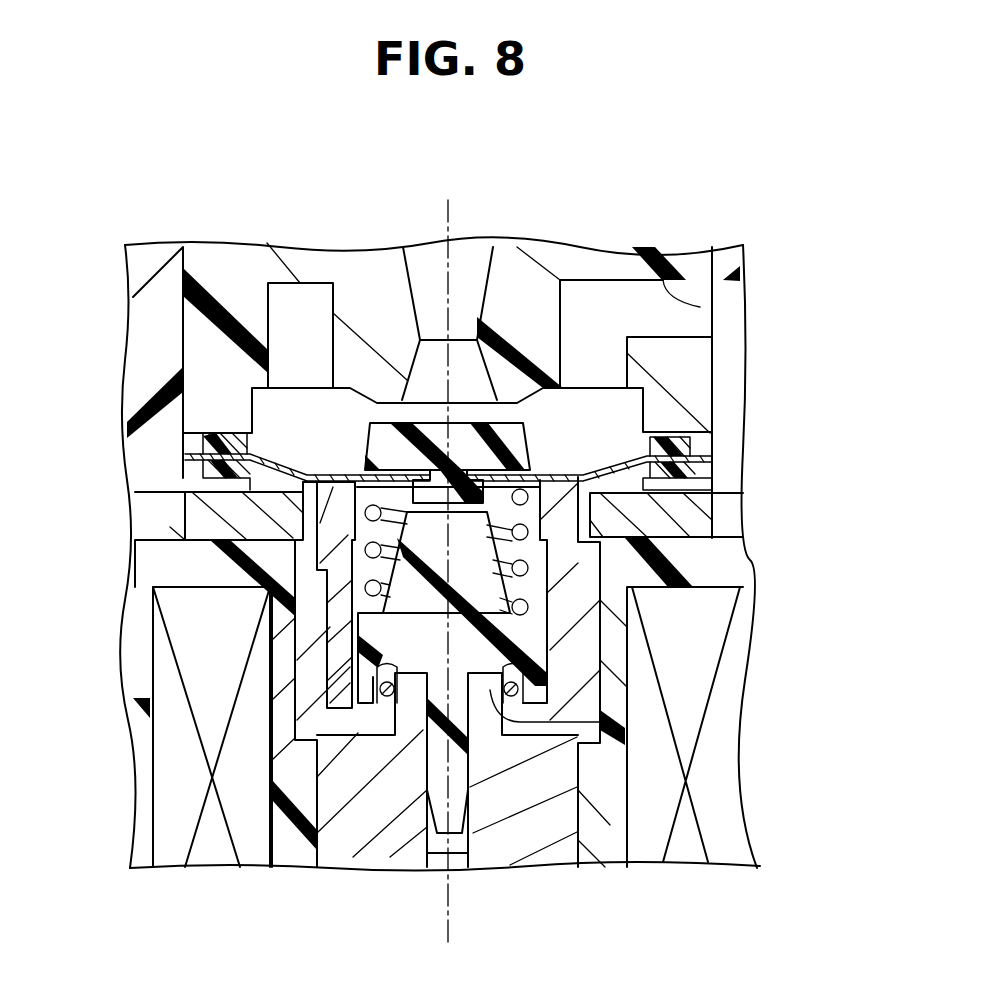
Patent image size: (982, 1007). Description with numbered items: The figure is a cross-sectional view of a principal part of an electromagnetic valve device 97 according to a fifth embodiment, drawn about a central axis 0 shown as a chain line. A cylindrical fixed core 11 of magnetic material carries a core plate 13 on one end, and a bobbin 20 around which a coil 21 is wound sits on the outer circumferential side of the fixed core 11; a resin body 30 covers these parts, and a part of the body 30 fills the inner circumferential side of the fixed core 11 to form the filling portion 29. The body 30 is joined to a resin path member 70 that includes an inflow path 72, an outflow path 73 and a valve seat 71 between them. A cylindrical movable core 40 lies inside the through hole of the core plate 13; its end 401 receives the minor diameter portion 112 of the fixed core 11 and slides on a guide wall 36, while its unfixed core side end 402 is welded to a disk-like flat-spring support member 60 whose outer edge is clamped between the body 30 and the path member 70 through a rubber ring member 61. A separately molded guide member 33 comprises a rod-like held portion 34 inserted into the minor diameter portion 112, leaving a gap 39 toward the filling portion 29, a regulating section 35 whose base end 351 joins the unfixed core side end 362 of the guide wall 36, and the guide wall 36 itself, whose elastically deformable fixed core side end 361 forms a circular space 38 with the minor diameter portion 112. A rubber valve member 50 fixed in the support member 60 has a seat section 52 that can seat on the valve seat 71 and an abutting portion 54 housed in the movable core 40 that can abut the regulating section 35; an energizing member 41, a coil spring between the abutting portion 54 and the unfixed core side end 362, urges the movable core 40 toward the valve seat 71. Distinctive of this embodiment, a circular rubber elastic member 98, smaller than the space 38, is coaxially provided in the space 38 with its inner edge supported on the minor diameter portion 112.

The central axis 0 is at (452, 222).
The fixed core 11 is at (387, 845).
The core plate 13 is at (680, 518).
The bobbin 20 is at (607, 825).
The coil 21 is at (713, 790).
The filling portion 29 is at (457, 868).
The body 30 is at (140, 353).
The guide member 33 is at (556, 660).
The held portion 34 is at (455, 780).
The regulating section 35 is at (463, 543).
The guide wall 36 is at (362, 678).
The space 38 is at (518, 690).
The gap 39 is at (433, 843).
The movable core 40 is at (340, 597).
The energizing member 41 is at (493, 613).
The valve member 50 is at (373, 443).
The seat section 52 is at (513, 438).
The abutting portion 54 is at (637, 500).
The support member 60 is at (247, 482).
The rubber ring member 61 is at (700, 446).
The path member 70 is at (602, 265).
The valve seat 71 is at (490, 398).
The inflow path 72 is at (700, 307).
The outflow path 73 is at (400, 270).
The electromagnetic valve device 97 is at (755, 255).
The elastic member 98 is at (548, 718).
The minor diameter portion 112 is at (495, 715).
The base end 351 is at (462, 658).
The fixed core side end 361 is at (362, 703).
The unfixed core side end 362 is at (360, 623).
The end 401 is at (305, 712).
The unfixed core side end 402 is at (333, 487).